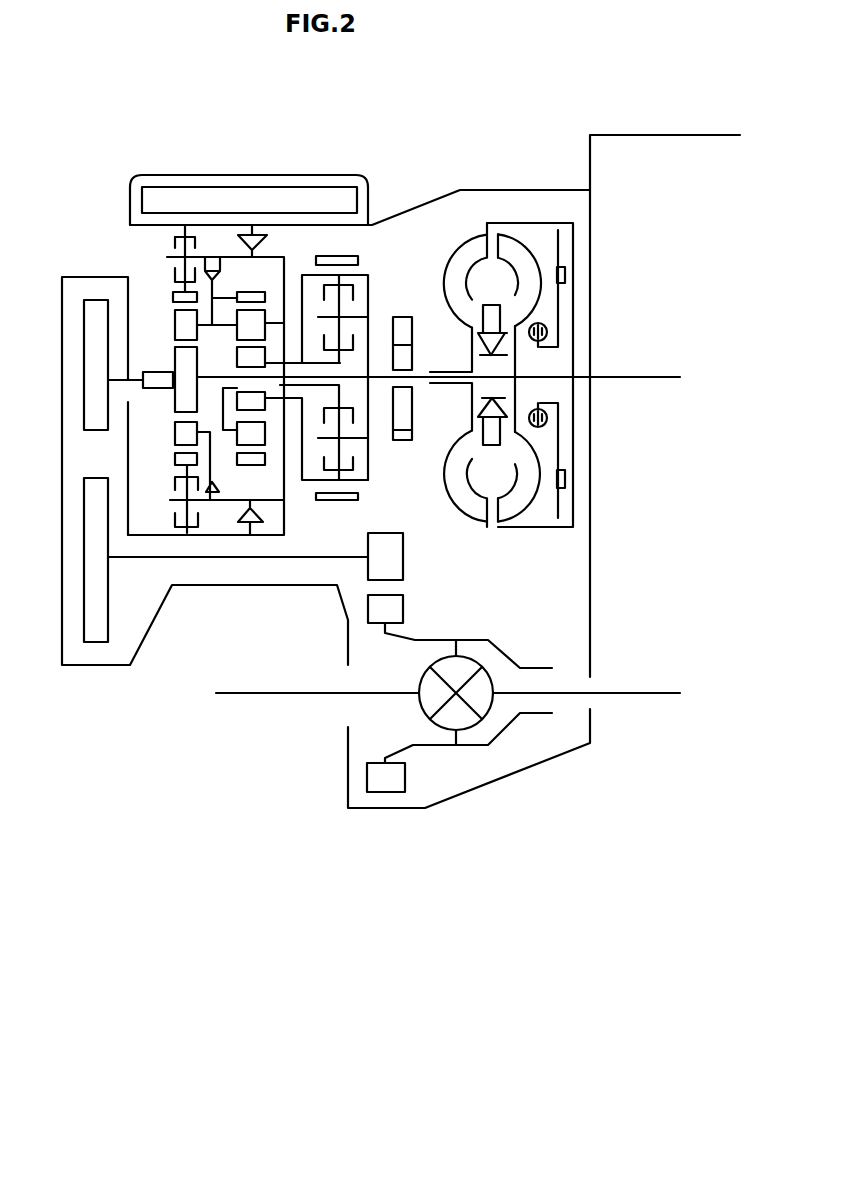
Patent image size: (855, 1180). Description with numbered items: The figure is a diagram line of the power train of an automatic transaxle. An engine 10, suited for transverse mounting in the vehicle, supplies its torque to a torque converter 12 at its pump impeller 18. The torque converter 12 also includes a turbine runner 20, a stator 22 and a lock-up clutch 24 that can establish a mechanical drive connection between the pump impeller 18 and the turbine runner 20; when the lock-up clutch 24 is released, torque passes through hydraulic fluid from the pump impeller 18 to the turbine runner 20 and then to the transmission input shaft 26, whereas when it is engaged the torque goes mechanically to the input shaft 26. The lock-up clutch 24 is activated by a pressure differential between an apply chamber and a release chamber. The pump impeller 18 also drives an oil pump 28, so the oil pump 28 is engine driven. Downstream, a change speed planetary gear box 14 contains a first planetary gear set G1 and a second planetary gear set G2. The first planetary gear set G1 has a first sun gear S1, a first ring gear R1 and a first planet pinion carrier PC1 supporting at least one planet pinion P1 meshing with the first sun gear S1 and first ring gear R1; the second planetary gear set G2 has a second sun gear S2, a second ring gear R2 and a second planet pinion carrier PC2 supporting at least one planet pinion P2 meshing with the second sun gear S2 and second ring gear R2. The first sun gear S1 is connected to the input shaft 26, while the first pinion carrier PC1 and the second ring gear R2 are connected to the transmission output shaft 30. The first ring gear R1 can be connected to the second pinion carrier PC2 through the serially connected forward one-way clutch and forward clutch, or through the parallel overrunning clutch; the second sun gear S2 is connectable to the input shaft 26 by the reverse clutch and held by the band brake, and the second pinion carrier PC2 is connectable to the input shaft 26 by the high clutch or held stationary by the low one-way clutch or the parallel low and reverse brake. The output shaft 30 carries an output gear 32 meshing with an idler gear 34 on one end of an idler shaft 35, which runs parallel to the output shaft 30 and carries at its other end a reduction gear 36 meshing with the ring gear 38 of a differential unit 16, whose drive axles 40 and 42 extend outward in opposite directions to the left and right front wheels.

The engine 10 is at (624, 134).
The torque converter 12 is at (541, 357).
The change speed planetary gear box 14 is at (235, 342).
The differential unit 16 is at (472, 652).
The pump impeller 18 is at (472, 253).
The turbine runner 20 is at (512, 253).
The stator 22 is at (490, 318).
The lock-up clutch 24 is at (558, 302).
The transmission input shaft 26 is at (432, 371).
The oil pump 28 is at (405, 441).
The transmission output shaft 30 is at (132, 378).
The output gear 32 is at (88, 402).
The idler gear 34 is at (95, 562).
The idler shaft 35 is at (332, 556).
The reduction gear 36 is at (403, 542).
The ring gear 38 is at (388, 783).
The drive axle 40 is at (318, 697).
The drive axle 42 is at (643, 697).
The first planetary gear set G1 is at (172, 308).
The second planetary gear set G2 is at (245, 283).
The first sun gear S1 is at (180, 398).
The first planet pinion P1 is at (182, 433).
The first planet pinion carrier PC1 is at (183, 463).
The first ring gear R1 is at (182, 466).
The second sun gear S2 is at (264, 402).
The second planet pinion P2 is at (255, 435).
The second planet pinion carrier PC2 is at (222, 432).
The second ring gear R2 is at (262, 462).